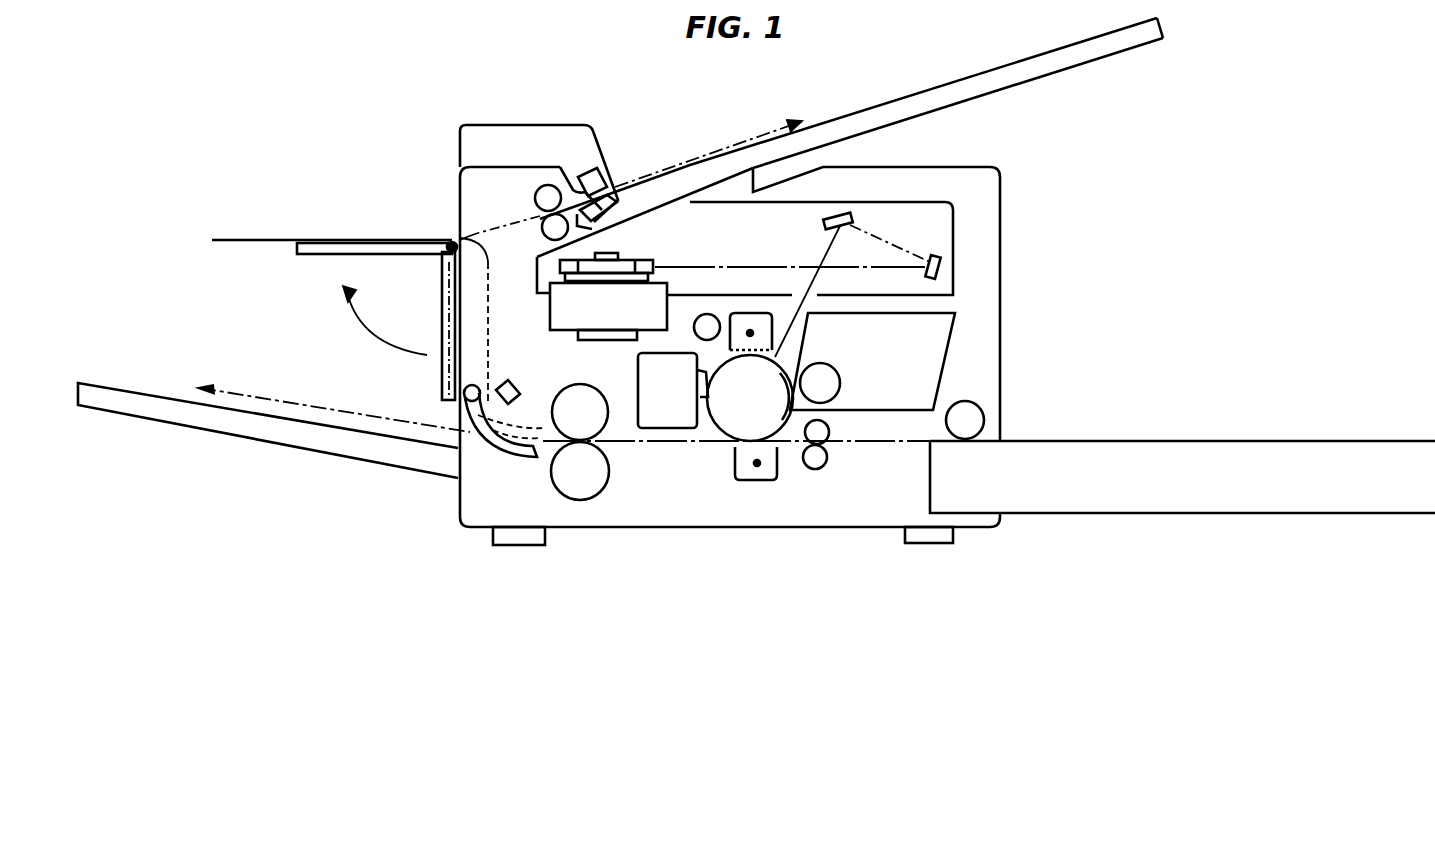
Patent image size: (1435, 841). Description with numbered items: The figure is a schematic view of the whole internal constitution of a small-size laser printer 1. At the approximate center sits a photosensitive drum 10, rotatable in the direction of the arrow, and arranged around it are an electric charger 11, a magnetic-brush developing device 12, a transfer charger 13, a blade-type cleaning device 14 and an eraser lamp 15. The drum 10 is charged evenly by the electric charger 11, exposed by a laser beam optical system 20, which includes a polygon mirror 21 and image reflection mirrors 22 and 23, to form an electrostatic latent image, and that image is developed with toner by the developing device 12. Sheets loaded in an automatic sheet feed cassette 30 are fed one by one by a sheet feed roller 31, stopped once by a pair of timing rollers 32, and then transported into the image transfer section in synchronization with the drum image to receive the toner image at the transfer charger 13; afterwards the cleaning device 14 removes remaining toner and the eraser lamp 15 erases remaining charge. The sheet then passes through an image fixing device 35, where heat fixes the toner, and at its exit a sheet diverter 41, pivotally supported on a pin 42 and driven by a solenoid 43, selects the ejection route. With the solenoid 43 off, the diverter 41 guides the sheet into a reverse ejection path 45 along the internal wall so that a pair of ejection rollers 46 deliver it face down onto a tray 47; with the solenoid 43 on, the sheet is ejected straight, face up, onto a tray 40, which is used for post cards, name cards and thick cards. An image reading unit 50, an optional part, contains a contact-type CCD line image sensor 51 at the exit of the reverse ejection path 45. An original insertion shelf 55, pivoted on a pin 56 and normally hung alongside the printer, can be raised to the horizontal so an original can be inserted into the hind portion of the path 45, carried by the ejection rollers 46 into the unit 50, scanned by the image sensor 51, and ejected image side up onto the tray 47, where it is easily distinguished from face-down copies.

The printer 1 is at (1018, 305).
The photosensitive drum 10 is at (715, 432).
The electric charger 11 is at (751, 325).
The developing device 12 is at (957, 335).
The transfer charger 13 is at (756, 482).
The cleaning device 14 is at (660, 418).
The eraser lamp 15 is at (707, 313).
The laser beam optical system 20 is at (945, 228).
The polygon mirror 21 is at (630, 268).
The image reflection mirror 22 is at (945, 265).
The image reflection mirror 23 is at (856, 215).
The automatic sheet feed cassette 30 is at (1090, 515).
The sheet feed roller 31 is at (980, 415).
The timing rollers 32 is at (828, 462).
The image fixing device 35 is at (597, 385).
The tray 40 is at (305, 452).
The sheet diverter 41 is at (513, 462).
The pin 42 is at (445, 387).
The solenoid 43 is at (506, 388).
The reverse ejection path 45 is at (493, 343).
The ejection rollers 46 is at (535, 195).
The tray 47 is at (915, 105).
The image reading unit 50 is at (562, 122).
The image sensor 51 is at (602, 178).
The original insertion shelf 55 is at (315, 248).
The pin 56 is at (448, 242).